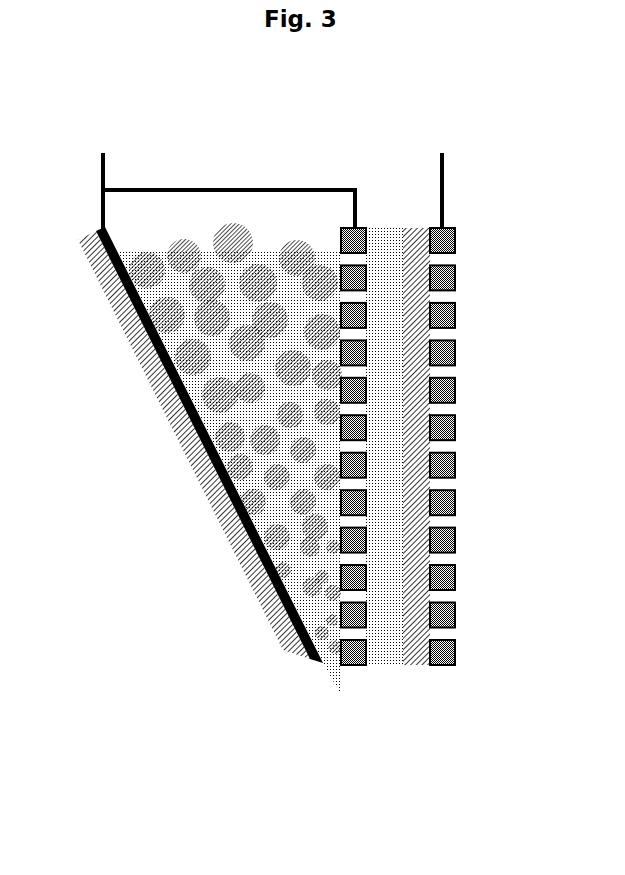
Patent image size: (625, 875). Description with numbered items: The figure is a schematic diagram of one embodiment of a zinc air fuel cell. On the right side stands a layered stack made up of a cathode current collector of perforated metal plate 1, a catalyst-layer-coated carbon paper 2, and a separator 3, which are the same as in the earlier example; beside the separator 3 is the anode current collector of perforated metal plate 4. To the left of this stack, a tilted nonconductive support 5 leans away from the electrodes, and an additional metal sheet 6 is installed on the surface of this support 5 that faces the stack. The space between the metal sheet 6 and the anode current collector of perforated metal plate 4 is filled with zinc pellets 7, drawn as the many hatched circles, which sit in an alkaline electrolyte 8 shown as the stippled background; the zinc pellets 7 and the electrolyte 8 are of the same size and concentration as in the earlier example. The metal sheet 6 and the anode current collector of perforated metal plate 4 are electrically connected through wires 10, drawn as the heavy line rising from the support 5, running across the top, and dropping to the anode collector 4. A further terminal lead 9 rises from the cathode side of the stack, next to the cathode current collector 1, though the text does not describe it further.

The cathode current collector of perforated metal plate 1 is at (445, 665).
The catalyst-layer-coated carbon paper 2 is at (415, 665).
The separator 3 is at (390, 665).
The anode current collector of perforated metal plate 4 is at (333, 670).
The tilted nonconductive support 5 is at (248, 578).
The metal sheet 6 is at (177, 430).
The zinc pellets 7 is at (203, 247).
The alkaline electrolyte 8 is at (310, 243).
The terminal 9 is at (445, 175).
The wires 10 is at (106, 160).